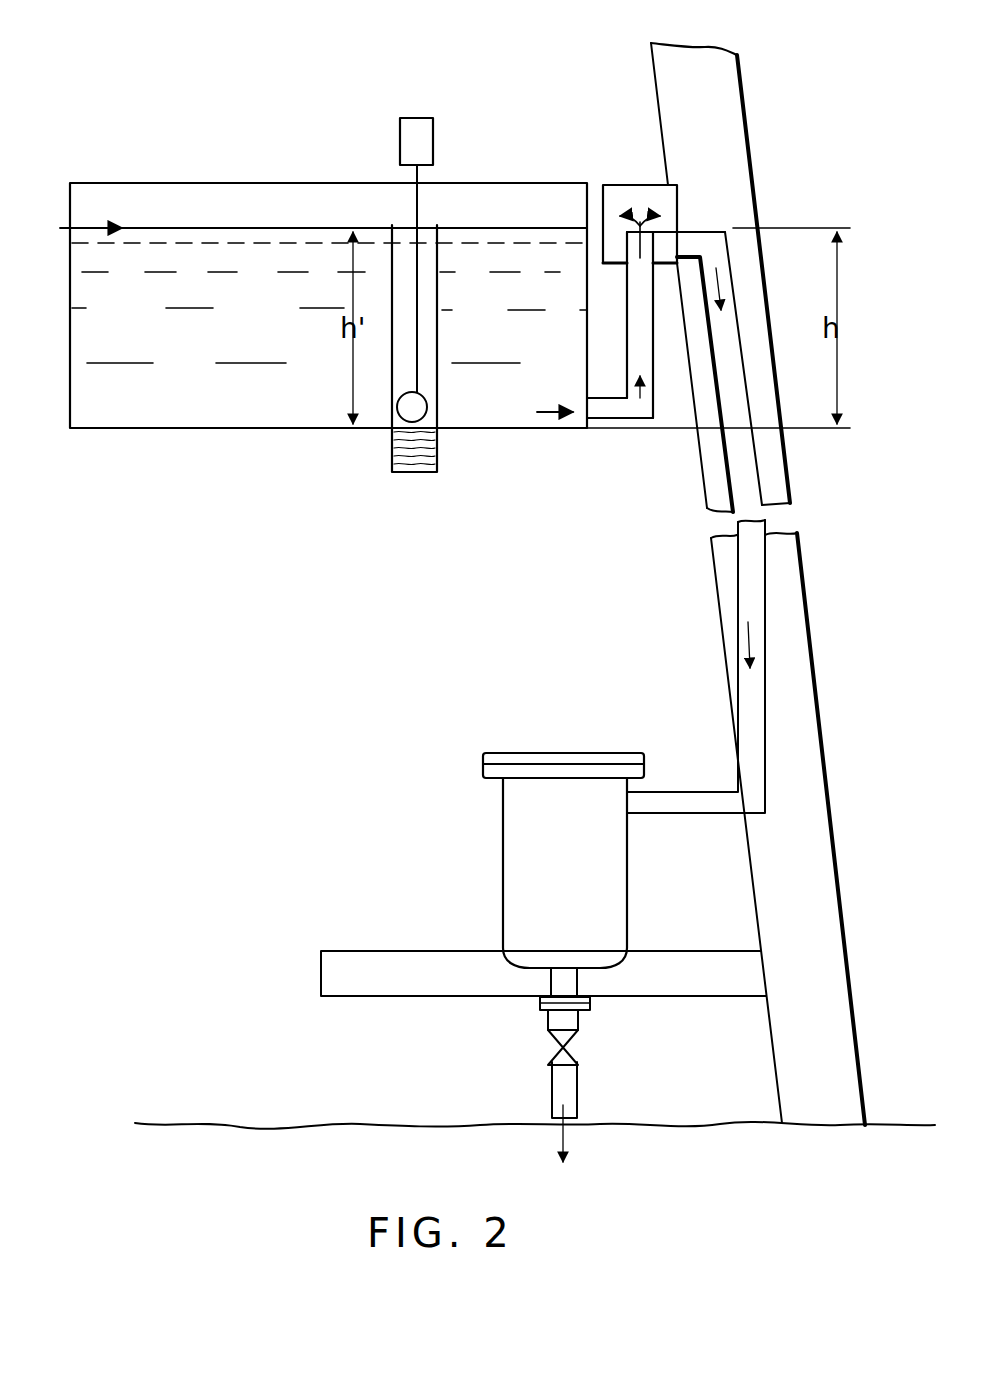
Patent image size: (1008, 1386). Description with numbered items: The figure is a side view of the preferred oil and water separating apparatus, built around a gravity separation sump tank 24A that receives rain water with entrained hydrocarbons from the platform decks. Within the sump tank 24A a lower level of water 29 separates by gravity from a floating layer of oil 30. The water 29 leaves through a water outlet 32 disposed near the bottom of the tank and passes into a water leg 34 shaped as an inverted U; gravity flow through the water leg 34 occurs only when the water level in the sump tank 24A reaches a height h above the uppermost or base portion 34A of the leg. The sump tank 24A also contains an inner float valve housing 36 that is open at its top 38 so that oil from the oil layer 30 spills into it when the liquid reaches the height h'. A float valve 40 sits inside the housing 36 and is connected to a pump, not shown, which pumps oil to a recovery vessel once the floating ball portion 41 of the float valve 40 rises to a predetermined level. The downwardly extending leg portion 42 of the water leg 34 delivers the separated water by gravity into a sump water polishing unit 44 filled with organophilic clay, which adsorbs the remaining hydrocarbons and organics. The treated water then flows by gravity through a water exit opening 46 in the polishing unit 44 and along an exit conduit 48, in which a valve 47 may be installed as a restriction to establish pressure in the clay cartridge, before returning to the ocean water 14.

The ocean water level 14 is at (365, 1142).
The gravity separation sump tank 24A is at (562, 116).
The water 29 is at (572, 362).
The floating layer of oil 30 is at (503, 228).
The water outlet 32 is at (590, 410).
The water leg 34 is at (654, 327).
The base portion of water leg 34A is at (688, 250).
The float valve housing 36 is at (425, 292).
The top of float valve housing 38 is at (405, 228).
The float valve 40 is at (420, 136).
The floating ball portion 41 is at (424, 398).
The downwardly extending leg portion 42 is at (757, 553).
The sump water polishing unit 44 is at (574, 850).
The water exit opening 46 is at (563, 968).
The valve 47 is at (578, 1040).
The exit conduit 48 is at (563, 1075).